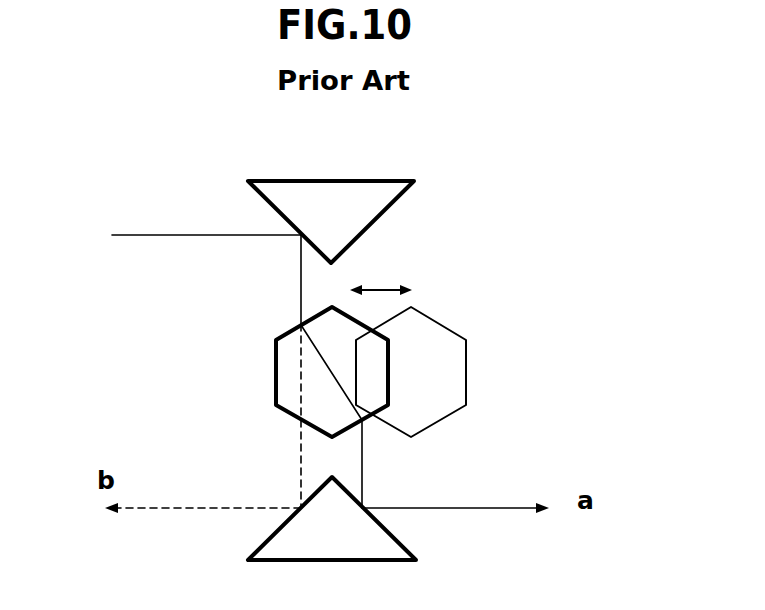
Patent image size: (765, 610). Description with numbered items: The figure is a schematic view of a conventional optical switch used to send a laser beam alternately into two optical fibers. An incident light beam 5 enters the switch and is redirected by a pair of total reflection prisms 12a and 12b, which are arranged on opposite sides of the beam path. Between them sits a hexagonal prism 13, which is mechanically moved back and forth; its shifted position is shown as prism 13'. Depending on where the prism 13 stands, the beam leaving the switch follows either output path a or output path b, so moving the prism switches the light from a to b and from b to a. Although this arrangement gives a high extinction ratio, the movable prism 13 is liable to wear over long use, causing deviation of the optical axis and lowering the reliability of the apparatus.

The incident light beam 5 is at (148, 235).
The total reflection prism 12a is at (370, 207).
The total reflection prism 12b is at (385, 527).
The prism 13 is at (286, 356).
The prism (shifted position) 13' is at (473, 372).